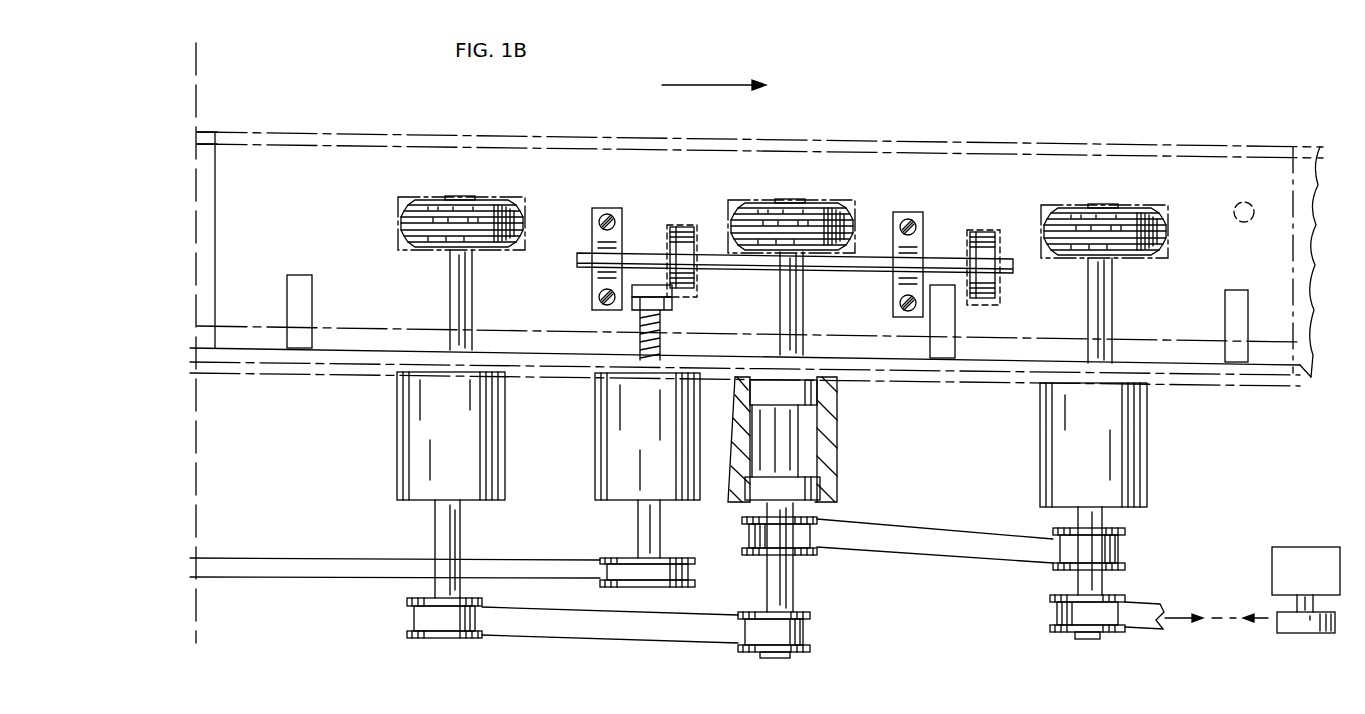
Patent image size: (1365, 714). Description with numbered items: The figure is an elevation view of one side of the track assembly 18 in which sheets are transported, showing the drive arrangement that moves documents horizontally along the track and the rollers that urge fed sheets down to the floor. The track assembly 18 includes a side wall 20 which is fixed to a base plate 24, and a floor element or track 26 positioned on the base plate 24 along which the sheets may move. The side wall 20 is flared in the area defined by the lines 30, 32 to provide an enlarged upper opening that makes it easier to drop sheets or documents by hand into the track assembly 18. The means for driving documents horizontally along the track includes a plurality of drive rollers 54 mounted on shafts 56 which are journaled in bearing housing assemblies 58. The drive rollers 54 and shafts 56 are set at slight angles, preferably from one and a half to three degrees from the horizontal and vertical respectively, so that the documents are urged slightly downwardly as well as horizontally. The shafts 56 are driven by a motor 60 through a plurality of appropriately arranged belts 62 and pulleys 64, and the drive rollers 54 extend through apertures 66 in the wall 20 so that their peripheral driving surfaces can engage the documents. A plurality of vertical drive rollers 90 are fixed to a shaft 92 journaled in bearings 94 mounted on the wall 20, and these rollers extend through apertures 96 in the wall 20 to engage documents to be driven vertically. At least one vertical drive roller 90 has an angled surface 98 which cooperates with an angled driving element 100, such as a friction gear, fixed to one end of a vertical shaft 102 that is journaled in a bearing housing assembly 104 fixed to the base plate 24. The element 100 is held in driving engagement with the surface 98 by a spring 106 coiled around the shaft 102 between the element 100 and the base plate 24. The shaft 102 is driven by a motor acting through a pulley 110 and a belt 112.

The track assembly 18 is at (772, 343).
The side wall 20 is at (433, 128).
The base plate 24 is at (1235, 386).
The floor element or track 26 is at (1015, 333).
The line 30 is at (215, 198).
The line 32 is at (1293, 242).
The drive roller 54 is at (420, 216).
The shaft 56 is at (450, 280).
The bearing housing assembly 58 is at (397, 426).
The motor 60 is at (1305, 547).
The belt 62 is at (613, 638).
The pulley 64 is at (420, 636).
The aperture 66 is at (775, 213).
The vertical drive roller 90 is at (670, 240).
The shaft 92 is at (868, 272).
The bearing 94 is at (592, 275).
The aperture 96 is at (813, 243).
The angled surface 98 is at (672, 290).
The angled driving element 100 is at (672, 305).
The vertical shaft 102 is at (638, 527).
The bearing housing assembly 104 is at (617, 428).
The spring 106 is at (640, 328).
The pulley 110 is at (680, 584).
The belt 112 is at (283, 578).